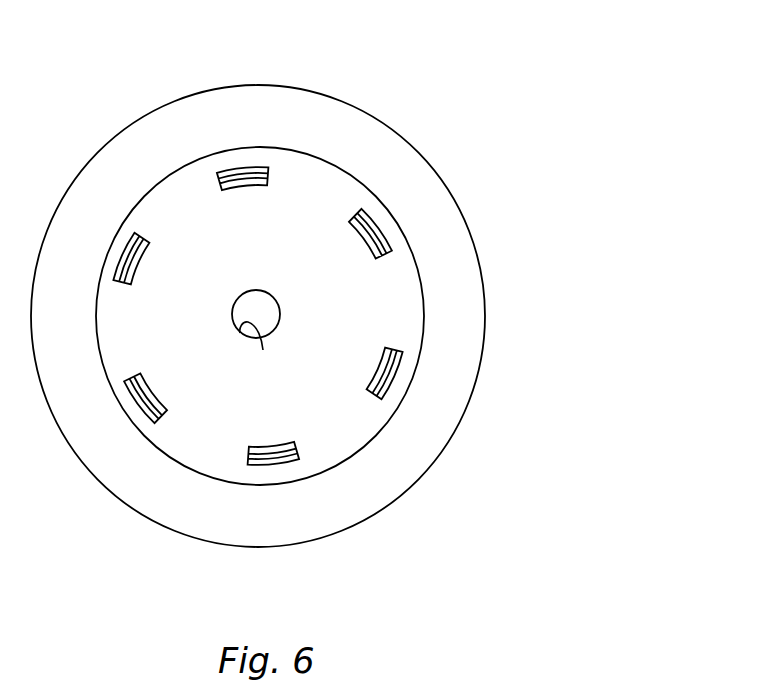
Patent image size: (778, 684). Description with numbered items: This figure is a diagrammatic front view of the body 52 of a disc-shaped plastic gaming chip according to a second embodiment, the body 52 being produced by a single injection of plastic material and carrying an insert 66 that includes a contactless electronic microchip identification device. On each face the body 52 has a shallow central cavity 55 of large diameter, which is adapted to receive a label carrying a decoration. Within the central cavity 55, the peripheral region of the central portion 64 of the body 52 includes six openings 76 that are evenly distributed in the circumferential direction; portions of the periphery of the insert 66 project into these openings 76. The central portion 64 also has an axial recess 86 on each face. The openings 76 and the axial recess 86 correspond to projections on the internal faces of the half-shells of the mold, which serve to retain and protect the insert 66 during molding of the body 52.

The body 52 is at (403, 122).
The central cavity 55 is at (415, 283).
The central portion 64 is at (273, 258).
The insert 66 is at (370, 230).
The openings 76 is at (392, 378).
The axial recess 86 is at (263, 343).